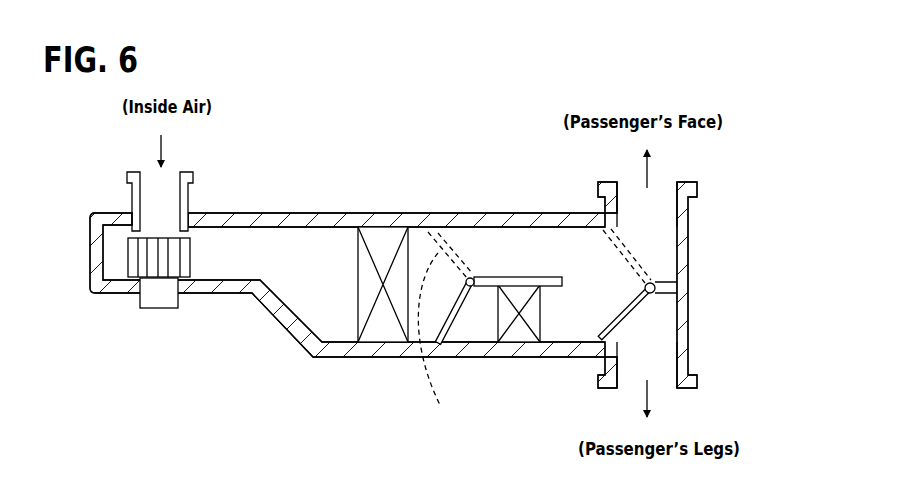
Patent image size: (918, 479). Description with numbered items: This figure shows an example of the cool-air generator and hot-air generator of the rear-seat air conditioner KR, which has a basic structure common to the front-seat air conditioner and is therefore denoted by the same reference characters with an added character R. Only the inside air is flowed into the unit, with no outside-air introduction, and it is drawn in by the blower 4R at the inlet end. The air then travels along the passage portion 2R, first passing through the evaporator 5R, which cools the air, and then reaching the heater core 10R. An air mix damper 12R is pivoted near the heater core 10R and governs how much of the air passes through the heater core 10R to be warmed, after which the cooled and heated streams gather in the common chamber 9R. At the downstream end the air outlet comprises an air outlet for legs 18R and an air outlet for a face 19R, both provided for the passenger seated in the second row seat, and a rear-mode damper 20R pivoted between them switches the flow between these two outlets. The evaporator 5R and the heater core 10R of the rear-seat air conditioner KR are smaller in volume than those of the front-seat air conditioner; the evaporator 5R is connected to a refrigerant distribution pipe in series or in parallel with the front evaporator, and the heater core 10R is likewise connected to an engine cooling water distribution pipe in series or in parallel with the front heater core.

The rear-seat air conditioner KR is at (382, 133).
The passage portion 2R is at (307, 305).
The blower 4R is at (152, 262).
The evaporator 5R is at (378, 330).
The common chamber 9R is at (590, 297).
The heater core 10R is at (518, 333).
The air mix damper 12R is at (463, 320).
The air outlet for legs 18R is at (660, 380).
The air outlet for a face 19R is at (660, 195).
The rear-mode damper 20R is at (627, 313).